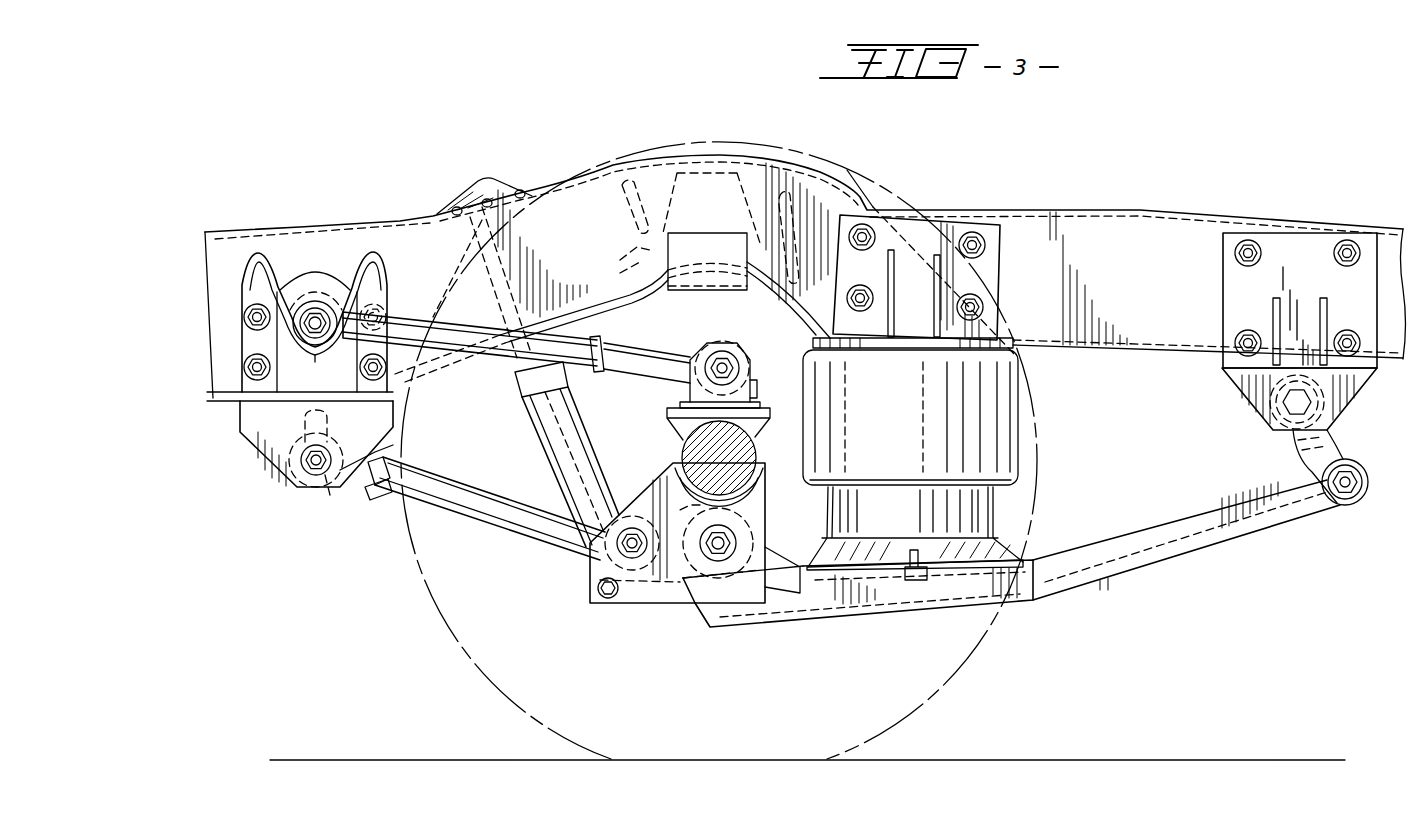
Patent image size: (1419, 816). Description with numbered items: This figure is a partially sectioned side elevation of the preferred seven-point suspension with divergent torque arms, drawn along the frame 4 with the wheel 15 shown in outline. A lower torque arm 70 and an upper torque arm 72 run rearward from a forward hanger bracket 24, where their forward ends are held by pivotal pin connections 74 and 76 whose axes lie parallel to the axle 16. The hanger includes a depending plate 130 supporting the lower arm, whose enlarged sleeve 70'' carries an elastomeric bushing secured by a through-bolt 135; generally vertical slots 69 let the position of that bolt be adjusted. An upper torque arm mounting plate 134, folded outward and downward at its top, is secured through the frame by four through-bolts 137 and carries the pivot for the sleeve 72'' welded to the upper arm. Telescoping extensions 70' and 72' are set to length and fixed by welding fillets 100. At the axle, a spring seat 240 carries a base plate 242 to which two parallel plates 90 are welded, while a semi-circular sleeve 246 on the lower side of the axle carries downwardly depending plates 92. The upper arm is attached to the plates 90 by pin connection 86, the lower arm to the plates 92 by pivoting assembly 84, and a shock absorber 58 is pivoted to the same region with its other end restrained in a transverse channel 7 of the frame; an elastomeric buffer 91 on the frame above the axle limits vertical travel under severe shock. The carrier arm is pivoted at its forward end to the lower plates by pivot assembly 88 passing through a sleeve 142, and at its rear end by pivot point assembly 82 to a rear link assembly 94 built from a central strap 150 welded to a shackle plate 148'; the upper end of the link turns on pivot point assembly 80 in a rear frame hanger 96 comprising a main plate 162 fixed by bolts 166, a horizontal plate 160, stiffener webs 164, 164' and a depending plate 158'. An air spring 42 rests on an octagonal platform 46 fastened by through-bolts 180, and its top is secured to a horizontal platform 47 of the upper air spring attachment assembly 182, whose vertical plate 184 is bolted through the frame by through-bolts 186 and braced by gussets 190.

The frame 4 is at (1140, 330).
The transverse channel 7 is at (462, 192).
The wheel 15 is at (965, 672).
The axle 16 is at (690, 452).
The forward hanger bracket 24 is at (338, 430).
The air spring 42 is at (1020, 435).
The generally octagonal platform 46 is at (1008, 548).
The horizontal platform 47 is at (812, 336).
The shock absorber 58 is at (545, 456).
The vertically-running slots 69 is at (303, 418).
The lower torque arm 70 is at (490, 526).
The telescoping torque arm extension 70' is at (343, 505).
The enlarged sleeve 70'' is at (296, 501).
The upper torque arm 72 is at (516, 365).
The telescoping torque arm extension 72' is at (663, 326).
The sleeve 72'' is at (322, 366).
The pivotal pin connection 74 is at (310, 464).
The pivotal pin connection 76 is at (316, 312).
The pivot point assembly 80 is at (1312, 398).
The pivot point assembly 82 is at (1360, 486).
The pivoting assembly 84 is at (632, 552).
The pin connection 86 is at (735, 365).
The pivot assembly 88 is at (738, 541).
The parallel plates 90 is at (733, 343).
The elastomeric buffer 91 is at (648, 290).
The downwardly depending plates 92 is at (768, 512).
The rear link assembly 94 is at (1350, 447).
The rear frame hanger 96 is at (1286, 345).
The welding fillets 100 is at (368, 500).
The depending plate 130 is at (255, 440).
The upper torque arm mounting plate 134 is at (380, 262).
The through-bolt 135 is at (375, 445).
The through-bolts 137 is at (255, 305).
The sleeve 142 is at (685, 507).
The shackle plate 148' is at (1011, 537).
The central strap 150 is at (1328, 440).
The downwardly depending plate 158' is at (1206, 425).
The horizontal plate 160 is at (1222, 372).
The main plate 162 is at (1223, 272).
The stiffener web 164 is at (1225, 323).
The stiffener web 164' is at (1300, 315).
The bolts 166 is at (1248, 245).
The through-bolts 180 is at (920, 580).
The upper air spring attachment assembly 182 is at (925, 312).
The vertical plate 184 is at (1000, 272).
The through-bolts 186 is at (868, 232).
The gussets 190 is at (930, 268).
The spring seat 240 is at (762, 423).
The base plate 242 is at (755, 392).
The saddle 246 is at (665, 485).